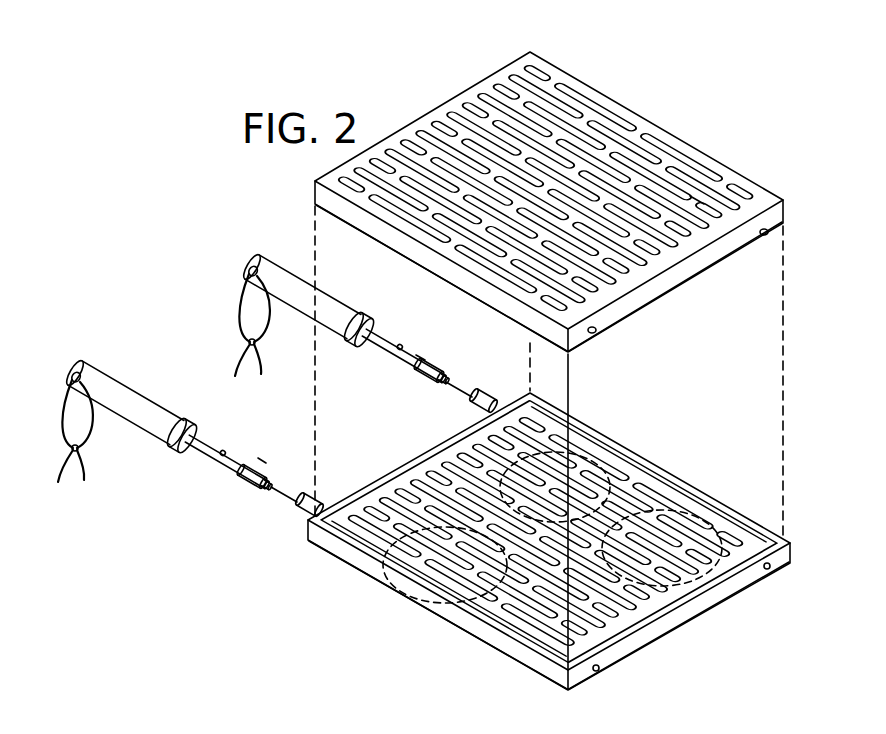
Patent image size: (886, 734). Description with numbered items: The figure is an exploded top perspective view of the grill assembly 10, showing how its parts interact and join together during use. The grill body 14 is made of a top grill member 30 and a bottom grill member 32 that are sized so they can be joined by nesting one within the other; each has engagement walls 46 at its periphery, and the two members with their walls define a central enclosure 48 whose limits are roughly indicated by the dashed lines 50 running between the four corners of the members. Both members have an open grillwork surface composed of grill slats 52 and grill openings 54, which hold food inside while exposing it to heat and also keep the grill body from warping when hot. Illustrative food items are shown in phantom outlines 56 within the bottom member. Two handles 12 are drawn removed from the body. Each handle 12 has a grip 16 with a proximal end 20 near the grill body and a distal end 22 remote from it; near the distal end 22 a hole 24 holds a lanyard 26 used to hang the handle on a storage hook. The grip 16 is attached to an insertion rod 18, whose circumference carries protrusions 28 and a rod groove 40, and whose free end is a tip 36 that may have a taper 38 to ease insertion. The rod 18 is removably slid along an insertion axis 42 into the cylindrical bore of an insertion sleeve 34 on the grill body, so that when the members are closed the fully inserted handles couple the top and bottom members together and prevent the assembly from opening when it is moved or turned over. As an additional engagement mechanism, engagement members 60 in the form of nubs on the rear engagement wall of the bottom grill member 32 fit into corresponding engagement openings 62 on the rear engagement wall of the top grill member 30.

The grill assembly 10 is at (752, 80).
The handle 12 is at (338, 296).
The grill body 14 is at (816, 244).
The grip 16 is at (275, 272).
The insertion rod 18 is at (372, 332).
The proximal end 20 is at (355, 325).
The distal end 22 is at (245, 265).
The hole 24 is at (240, 283).
The lanyard 26 is at (232, 332).
The protrusion 28 is at (396, 350).
The top grill member 30 is at (617, 94).
The bottom grill member 32 is at (522, 656).
The insertion sleeve 34 is at (474, 405).
The tip 36 is at (441, 368).
The taper 38 is at (428, 373).
The rod groove 40 is at (418, 366).
The insertion axis 42 is at (462, 384).
The engagement wall 46 is at (312, 200).
The central enclosure 48 is at (764, 410).
The dashed lines 50 is at (316, 275).
The grill slat 52 is at (697, 200).
The grill opening 54 is at (668, 185).
The phantom outlines 56 is at (583, 428).
The engagement member 60 is at (768, 570).
The engagement opening 62 is at (600, 332).